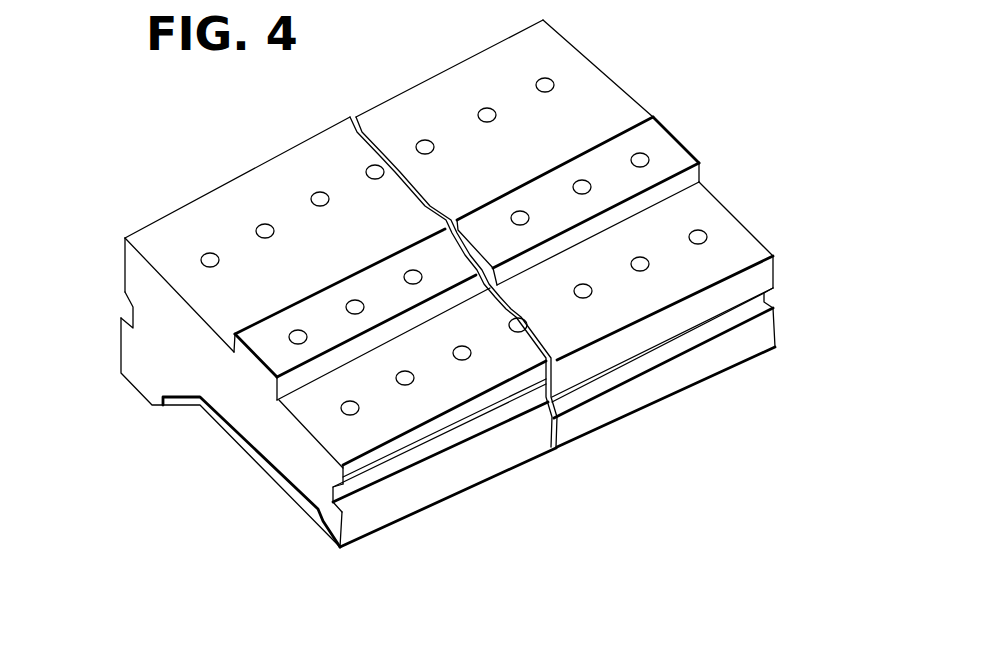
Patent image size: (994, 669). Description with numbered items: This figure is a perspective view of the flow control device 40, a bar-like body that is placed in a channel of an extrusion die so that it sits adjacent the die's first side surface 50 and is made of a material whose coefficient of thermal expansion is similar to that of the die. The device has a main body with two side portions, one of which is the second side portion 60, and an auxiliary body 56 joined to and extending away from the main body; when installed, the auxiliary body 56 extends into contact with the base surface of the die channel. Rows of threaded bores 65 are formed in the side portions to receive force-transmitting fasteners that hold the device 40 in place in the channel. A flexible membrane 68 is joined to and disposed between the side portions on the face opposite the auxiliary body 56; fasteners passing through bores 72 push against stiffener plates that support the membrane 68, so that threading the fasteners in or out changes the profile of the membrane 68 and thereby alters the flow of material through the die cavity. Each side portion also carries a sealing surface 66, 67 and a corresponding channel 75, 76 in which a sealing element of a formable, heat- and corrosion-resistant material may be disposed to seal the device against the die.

The flow control device 40 is at (223, 381).
The first side surface 50 is at (150, 222).
The auxiliary body 56 is at (383, 283).
The second side portion 60 is at (332, 527).
The threaded bores 65 is at (428, 140).
The sealing surface 66 is at (120, 356).
The sealing surface 67 is at (457, 475).
The flexible membrane 68 is at (240, 438).
The bores 72 is at (527, 213).
The channel 75 is at (130, 308).
The channel 76 is at (363, 493).